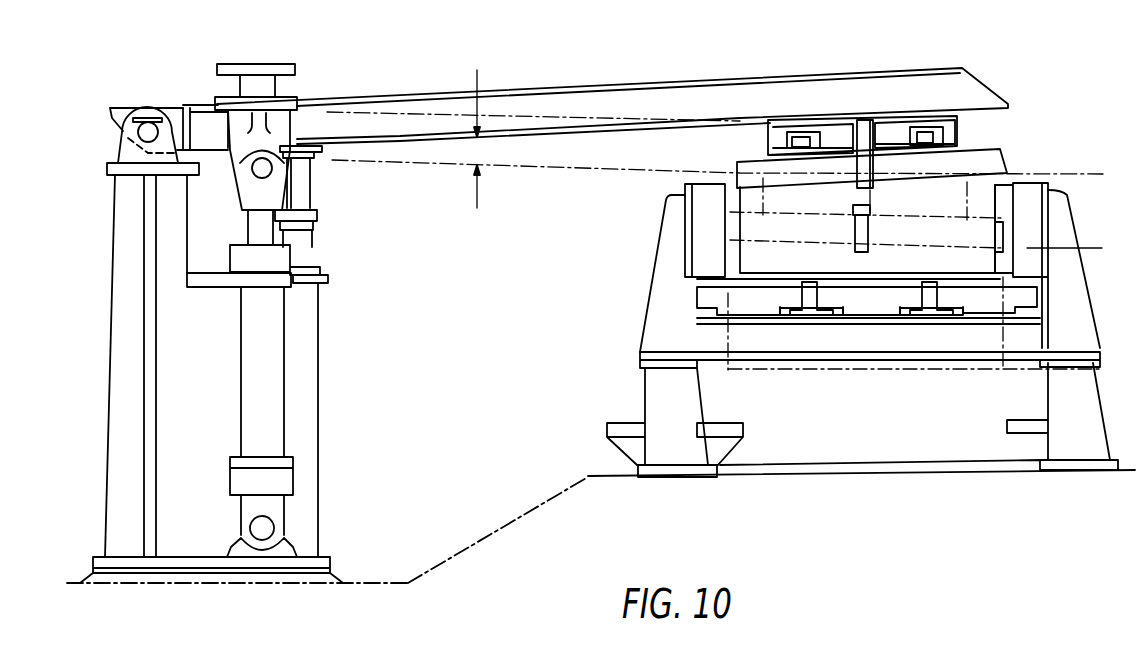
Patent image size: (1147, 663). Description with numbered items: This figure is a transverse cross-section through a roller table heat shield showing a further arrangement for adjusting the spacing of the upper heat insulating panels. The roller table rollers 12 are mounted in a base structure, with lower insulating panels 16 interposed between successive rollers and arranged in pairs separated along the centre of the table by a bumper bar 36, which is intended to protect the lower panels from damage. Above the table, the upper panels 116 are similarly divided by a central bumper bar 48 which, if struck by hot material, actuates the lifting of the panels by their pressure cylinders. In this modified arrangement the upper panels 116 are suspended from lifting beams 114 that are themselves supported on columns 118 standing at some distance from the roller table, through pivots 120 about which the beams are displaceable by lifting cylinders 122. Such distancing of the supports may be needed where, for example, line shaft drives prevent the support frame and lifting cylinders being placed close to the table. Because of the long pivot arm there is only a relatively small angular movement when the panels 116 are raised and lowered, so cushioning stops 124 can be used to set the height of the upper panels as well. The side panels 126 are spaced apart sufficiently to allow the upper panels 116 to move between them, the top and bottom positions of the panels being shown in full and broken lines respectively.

The roller table rollers 12 is at (810, 373).
The lower insulating panels 16 is at (988, 307).
The bumper bar 36 is at (810, 310).
The central bumper bar 48 is at (878, 167).
The lifting beams 114 is at (543, 90).
The upper panels 116 is at (1003, 151).
The columns 118 is at (300, 365).
The pivots 120 is at (148, 120).
The lifting cylinders 122 is at (262, 430).
The cushioning stops 124 is at (295, 192).
The side panels 126 is at (708, 229).